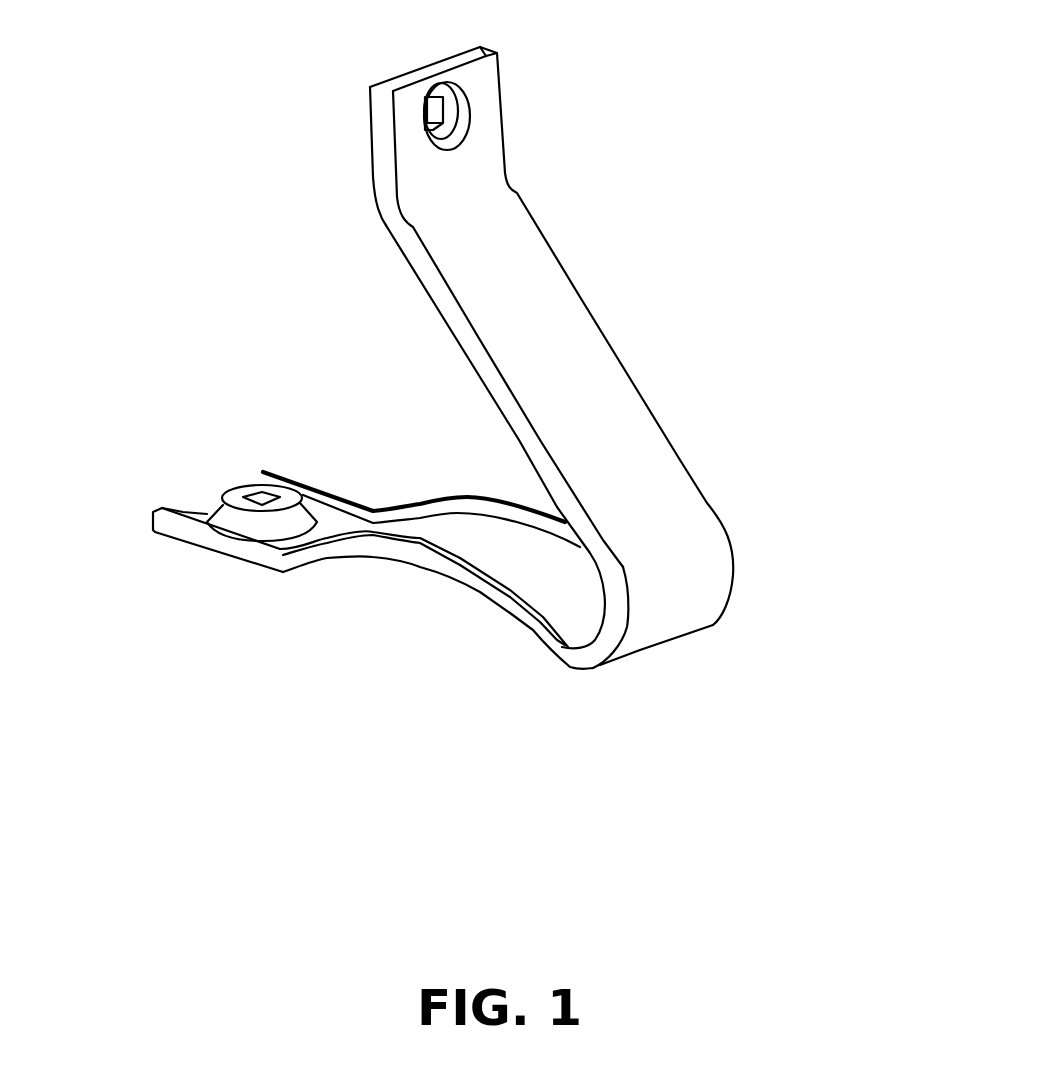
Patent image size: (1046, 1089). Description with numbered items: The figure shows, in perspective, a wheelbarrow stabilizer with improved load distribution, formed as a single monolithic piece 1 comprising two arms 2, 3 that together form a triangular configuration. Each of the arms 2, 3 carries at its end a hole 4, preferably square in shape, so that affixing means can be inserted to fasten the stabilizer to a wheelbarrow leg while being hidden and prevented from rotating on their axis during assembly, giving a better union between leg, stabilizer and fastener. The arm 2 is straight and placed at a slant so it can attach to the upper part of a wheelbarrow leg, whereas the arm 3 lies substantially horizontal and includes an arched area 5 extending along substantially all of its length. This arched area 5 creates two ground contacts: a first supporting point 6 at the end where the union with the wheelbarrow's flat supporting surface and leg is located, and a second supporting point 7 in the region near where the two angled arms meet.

The monolithic piece 1 is at (605, 284).
The arm 2 is at (575, 408).
The arm 3 is at (508, 553).
The hole 4 is at (437, 110).
The arched area 5 is at (437, 567).
The first supporting point 6 is at (217, 550).
The second supporting point 7 is at (582, 668).